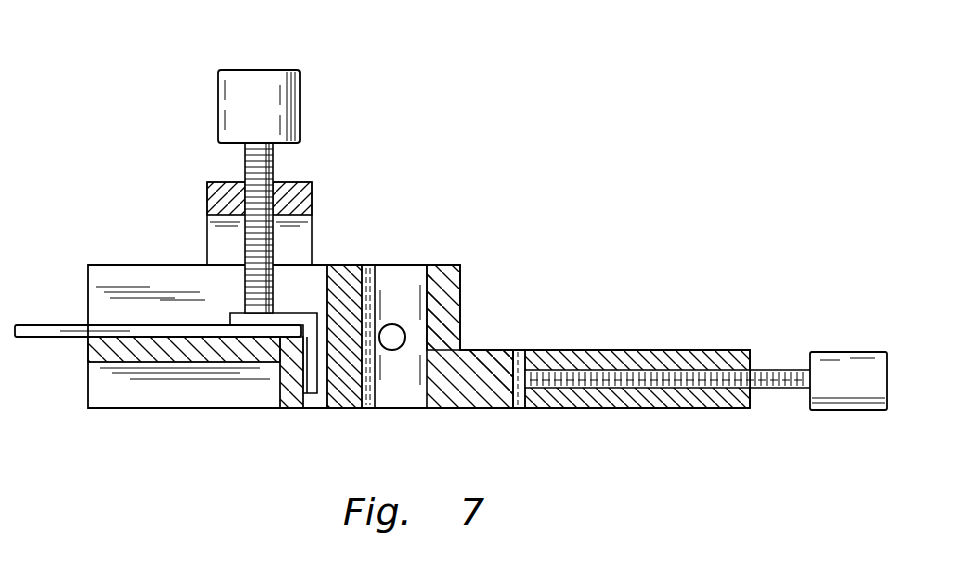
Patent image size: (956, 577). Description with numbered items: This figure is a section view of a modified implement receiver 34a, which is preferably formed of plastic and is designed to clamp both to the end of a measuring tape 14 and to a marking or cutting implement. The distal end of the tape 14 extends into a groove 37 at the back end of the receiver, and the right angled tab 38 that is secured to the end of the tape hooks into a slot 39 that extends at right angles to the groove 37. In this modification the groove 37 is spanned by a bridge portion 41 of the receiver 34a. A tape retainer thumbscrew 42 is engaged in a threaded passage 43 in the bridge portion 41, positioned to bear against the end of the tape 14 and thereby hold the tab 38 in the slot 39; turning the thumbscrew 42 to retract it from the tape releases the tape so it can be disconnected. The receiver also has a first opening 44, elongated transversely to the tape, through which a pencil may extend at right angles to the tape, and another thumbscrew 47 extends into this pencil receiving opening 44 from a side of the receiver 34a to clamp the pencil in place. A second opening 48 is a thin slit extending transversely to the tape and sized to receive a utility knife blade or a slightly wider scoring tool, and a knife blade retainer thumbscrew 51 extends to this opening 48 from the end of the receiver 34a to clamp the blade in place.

The measuring tape 14 is at (63, 340).
The implement receiver 34a is at (535, 222).
The groove 37 is at (123, 282).
The right angled tab 38 is at (310, 396).
The slot 39 is at (321, 398).
The bridge portion 41 is at (207, 205).
The tape retainer thumbscrew 42 is at (266, 70).
The threaded passage 43 is at (262, 176).
The first opening 44 is at (423, 295).
The thumbscrew 47 is at (391, 323).
The second opening 48 is at (516, 350).
The knife blade retainer thumbscrew 51 is at (840, 352).